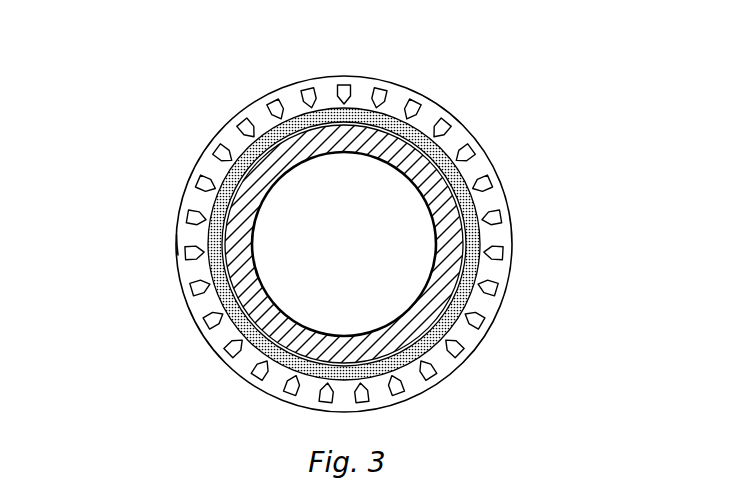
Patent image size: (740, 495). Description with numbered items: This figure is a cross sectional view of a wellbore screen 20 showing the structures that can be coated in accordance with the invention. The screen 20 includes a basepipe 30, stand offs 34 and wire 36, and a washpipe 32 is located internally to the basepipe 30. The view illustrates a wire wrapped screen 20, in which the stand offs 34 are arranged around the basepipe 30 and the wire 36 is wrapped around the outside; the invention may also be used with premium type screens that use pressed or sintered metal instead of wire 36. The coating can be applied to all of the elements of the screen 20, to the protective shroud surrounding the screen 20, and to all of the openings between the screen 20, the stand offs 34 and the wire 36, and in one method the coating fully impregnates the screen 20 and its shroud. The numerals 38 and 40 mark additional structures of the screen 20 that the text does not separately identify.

The screen 20 is at (370, 77).
The basepipe 30 is at (460, 180).
The washpipe 32 is at (430, 103).
The stand offs 34 is at (498, 220).
The wire 36 is at (187, 310).
The inner tube 38 is at (275, 150).
The protective ring 40 is at (247, 110).